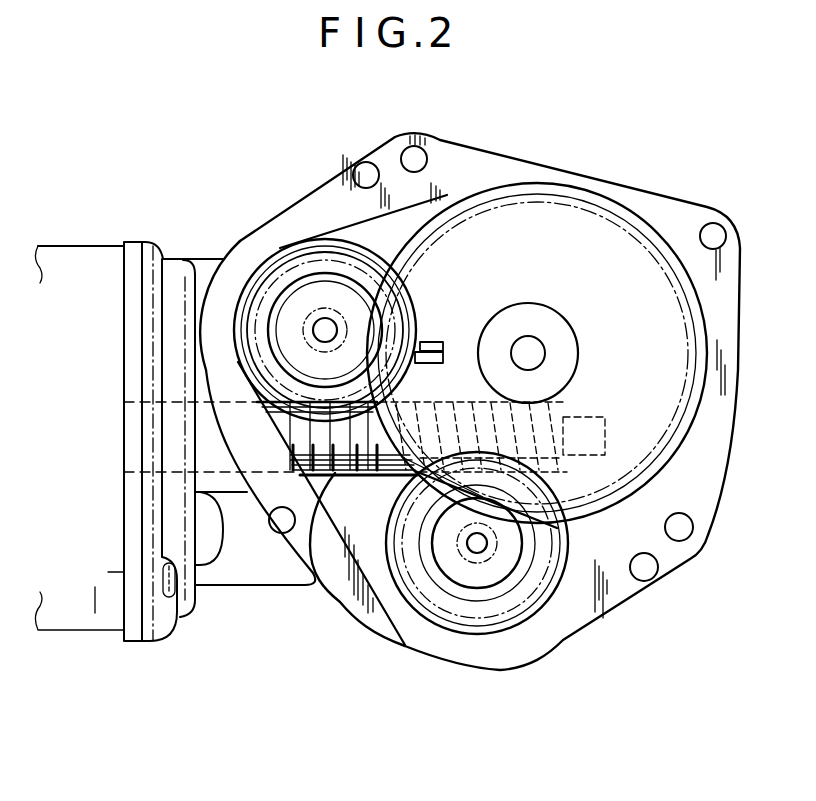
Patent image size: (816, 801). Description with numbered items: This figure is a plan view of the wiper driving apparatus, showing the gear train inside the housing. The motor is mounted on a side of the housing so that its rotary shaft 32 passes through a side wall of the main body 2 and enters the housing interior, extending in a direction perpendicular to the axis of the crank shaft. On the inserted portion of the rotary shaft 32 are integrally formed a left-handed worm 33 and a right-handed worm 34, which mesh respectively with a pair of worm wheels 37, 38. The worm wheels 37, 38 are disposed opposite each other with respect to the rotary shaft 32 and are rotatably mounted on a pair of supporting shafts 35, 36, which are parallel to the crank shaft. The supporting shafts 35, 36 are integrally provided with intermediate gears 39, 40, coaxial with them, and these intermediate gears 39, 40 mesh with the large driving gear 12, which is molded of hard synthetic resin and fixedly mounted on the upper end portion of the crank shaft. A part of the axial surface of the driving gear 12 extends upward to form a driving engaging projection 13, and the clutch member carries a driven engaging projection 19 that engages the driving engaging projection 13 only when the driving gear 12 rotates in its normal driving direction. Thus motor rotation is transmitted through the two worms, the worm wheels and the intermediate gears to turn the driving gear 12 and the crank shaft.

The main body 2 is at (638, 192).
The driving gear 12 is at (547, 183).
The driving engaging projection 13 is at (437, 363).
The driven engaging projection 19 is at (427, 342).
The rotary shaft 32 is at (212, 441).
The left-handed worm 33 is at (311, 582).
The right-handed worm 34 is at (573, 400).
The supporting shaft 35 is at (290, 315).
The supporting shaft 36 is at (483, 567).
The worm wheel 37 is at (288, 250).
The worm wheel 38 is at (548, 600).
The intermediate gear 39 is at (307, 207).
The intermediate gear 40 is at (397, 628).